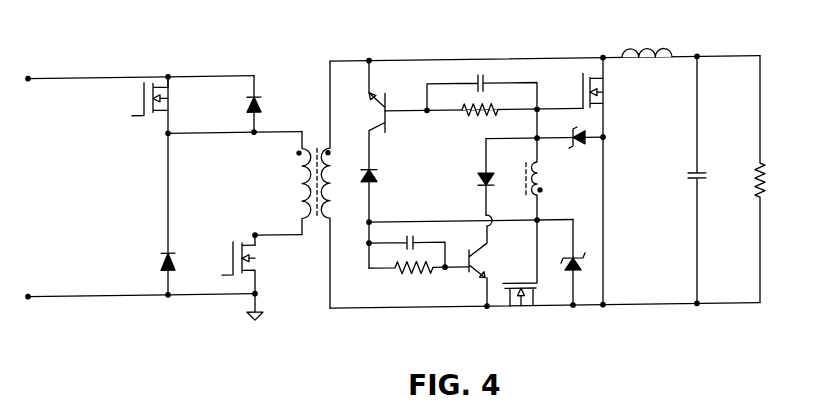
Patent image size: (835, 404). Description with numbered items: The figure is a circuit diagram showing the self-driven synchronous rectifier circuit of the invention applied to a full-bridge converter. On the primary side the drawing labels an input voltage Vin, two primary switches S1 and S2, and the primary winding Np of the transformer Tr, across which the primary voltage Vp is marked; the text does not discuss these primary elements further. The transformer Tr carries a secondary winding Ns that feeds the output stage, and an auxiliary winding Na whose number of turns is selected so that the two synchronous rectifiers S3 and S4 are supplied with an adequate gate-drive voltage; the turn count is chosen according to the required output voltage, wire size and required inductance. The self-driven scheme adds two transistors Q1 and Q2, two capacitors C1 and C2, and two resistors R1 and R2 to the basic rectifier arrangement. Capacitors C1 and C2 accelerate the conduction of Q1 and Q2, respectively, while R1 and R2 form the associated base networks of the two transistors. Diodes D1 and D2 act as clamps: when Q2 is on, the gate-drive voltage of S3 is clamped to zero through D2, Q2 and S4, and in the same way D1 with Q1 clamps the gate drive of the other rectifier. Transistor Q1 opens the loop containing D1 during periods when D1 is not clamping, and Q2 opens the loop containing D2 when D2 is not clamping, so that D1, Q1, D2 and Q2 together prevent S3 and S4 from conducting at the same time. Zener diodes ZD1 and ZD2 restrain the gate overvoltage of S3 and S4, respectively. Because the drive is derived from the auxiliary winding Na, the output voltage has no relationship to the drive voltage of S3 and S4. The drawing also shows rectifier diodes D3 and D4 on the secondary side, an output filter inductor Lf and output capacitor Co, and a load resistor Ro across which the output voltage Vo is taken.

The input voltage source Vin is at (97, 187).
The first switch (MOSFET) S1 is at (139, 97).
The second switch (MOSFET) S2 is at (229, 268).
The diode D1 is at (240, 104).
The diode D2 is at (156, 264).
The primary winding voltage Vp is at (242, 189).
The transformer Tr is at (308, 185).
The primary winding Np is at (289, 183).
The secondary winding Ns is at (335, 184).
The transistor Q1 is at (382, 114).
The transistor Q2 is at (467, 266).
The third diode D3 is at (386, 192).
The fourth diode D4 is at (475, 177).
The capacitor C1 is at (482, 85).
The capacitor C2 is at (395, 250).
The resistor R1 is at (474, 123).
The resistor R2 is at (419, 282).
The auxiliary winding turns Na is at (521, 164).
The synchronous rectifier S3 is at (607, 181).
The synchronous rectifier S4 is at (520, 274).
The zener diode ZD1 is at (575, 151).
The zener diode ZD2 is at (583, 262).
The output filter inductor Lf is at (647, 39).
The output capacitor Co is at (683, 180).
The load resistor Ro is at (749, 179).
The output voltage Vo is at (780, 179).